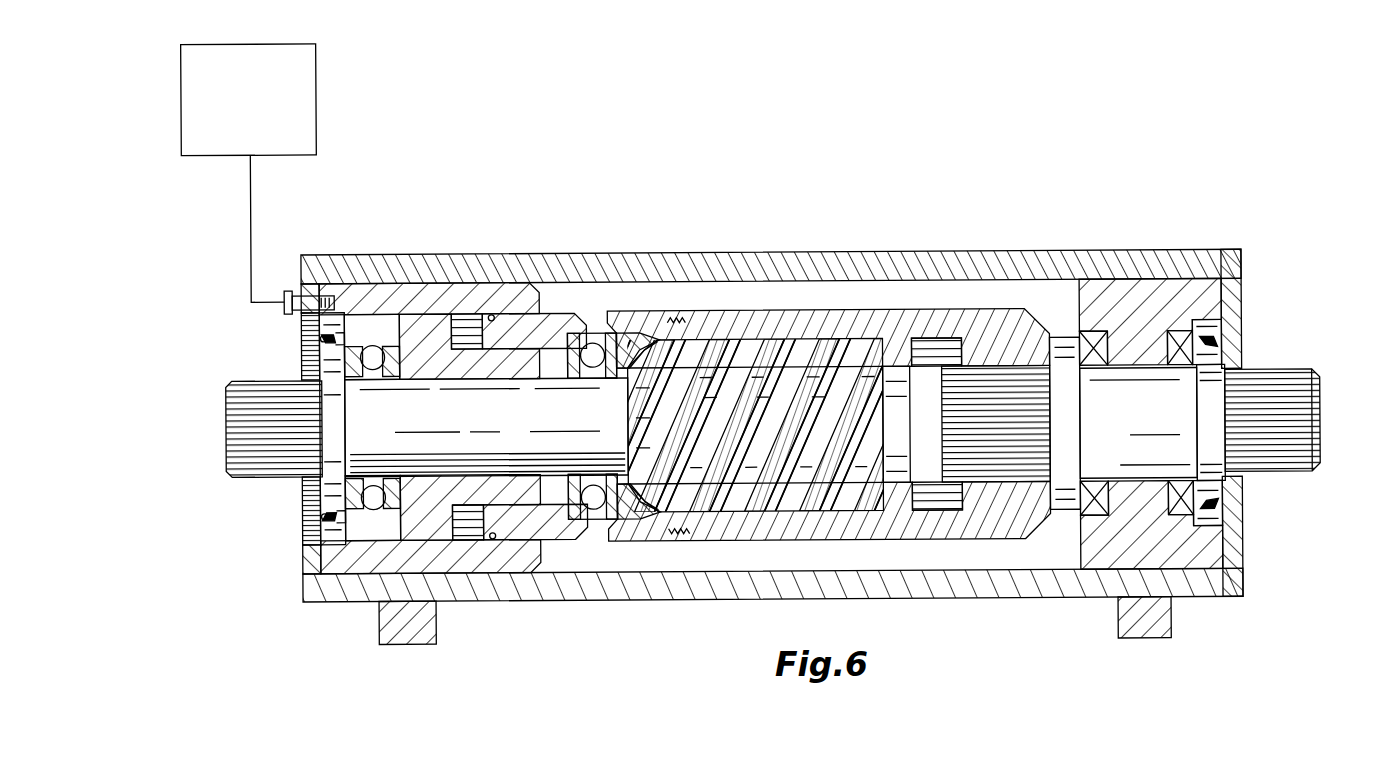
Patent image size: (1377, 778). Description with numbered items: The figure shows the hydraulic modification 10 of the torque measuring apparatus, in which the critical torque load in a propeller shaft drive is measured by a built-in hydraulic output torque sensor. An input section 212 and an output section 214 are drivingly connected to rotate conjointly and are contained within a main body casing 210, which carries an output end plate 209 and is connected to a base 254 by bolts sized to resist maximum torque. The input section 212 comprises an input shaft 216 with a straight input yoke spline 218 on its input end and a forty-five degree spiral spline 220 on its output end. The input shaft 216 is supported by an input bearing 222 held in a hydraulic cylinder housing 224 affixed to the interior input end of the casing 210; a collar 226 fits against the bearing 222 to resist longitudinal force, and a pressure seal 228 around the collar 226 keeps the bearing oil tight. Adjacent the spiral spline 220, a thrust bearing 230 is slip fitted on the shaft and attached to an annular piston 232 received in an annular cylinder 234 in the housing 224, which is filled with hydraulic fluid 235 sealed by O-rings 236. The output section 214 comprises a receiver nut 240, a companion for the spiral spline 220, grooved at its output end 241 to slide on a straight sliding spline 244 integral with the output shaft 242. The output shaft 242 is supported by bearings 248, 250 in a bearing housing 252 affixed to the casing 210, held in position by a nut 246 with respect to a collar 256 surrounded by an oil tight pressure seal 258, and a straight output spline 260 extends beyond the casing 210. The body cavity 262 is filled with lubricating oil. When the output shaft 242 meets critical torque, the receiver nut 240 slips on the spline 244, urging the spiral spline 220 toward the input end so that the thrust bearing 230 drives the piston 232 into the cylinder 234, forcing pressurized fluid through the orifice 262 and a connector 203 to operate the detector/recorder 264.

The hydraulic modification 10 is at (1163, 104).
The connector 203 is at (310, 256).
The output end plate 209 is at (1243, 262).
The main body housing or casing 210 is at (645, 270).
The input section 212 is at (585, 335).
The output section 214 is at (1000, 312).
The input shaft 216 is at (395, 450).
The straight input yoke spline 218 is at (258, 455).
The spiral spline or screw 220 is at (790, 420).
The input bearing 222 is at (392, 330).
The hydraulic cylinder housing 224 is at (437, 300).
The collar 226 is at (322, 382).
The pressure seal 228 is at (322, 339).
The thrust bearing 230 is at (605, 340).
The hollow or annular piston 232 is at (540, 330).
The annular chamber or cavity (cylinder) 234 is at (455, 545).
The hydraulic fluid 235 is at (467, 330).
The O-rings 236 is at (492, 316).
The receiver nut 240 is at (725, 330).
The output end of receiver nut 241 is at (993, 350).
The output shaft 242 is at (1175, 387).
The straight sliding spline 244 is at (1070, 417).
The nut 246 is at (1090, 336).
The bearing 248 is at (1110, 350).
The bearing 250 is at (1235, 324).
The bearing housing 252 is at (1182, 300).
The base 254 is at (413, 645).
The collar 256 is at (1210, 424).
The oil tight pressure seal 258 is at (1230, 346).
The straight output spline 260 is at (1277, 438).
The body cavity / orifice 262 is at (345, 300).
The detector/recorder 264 is at (318, 86).